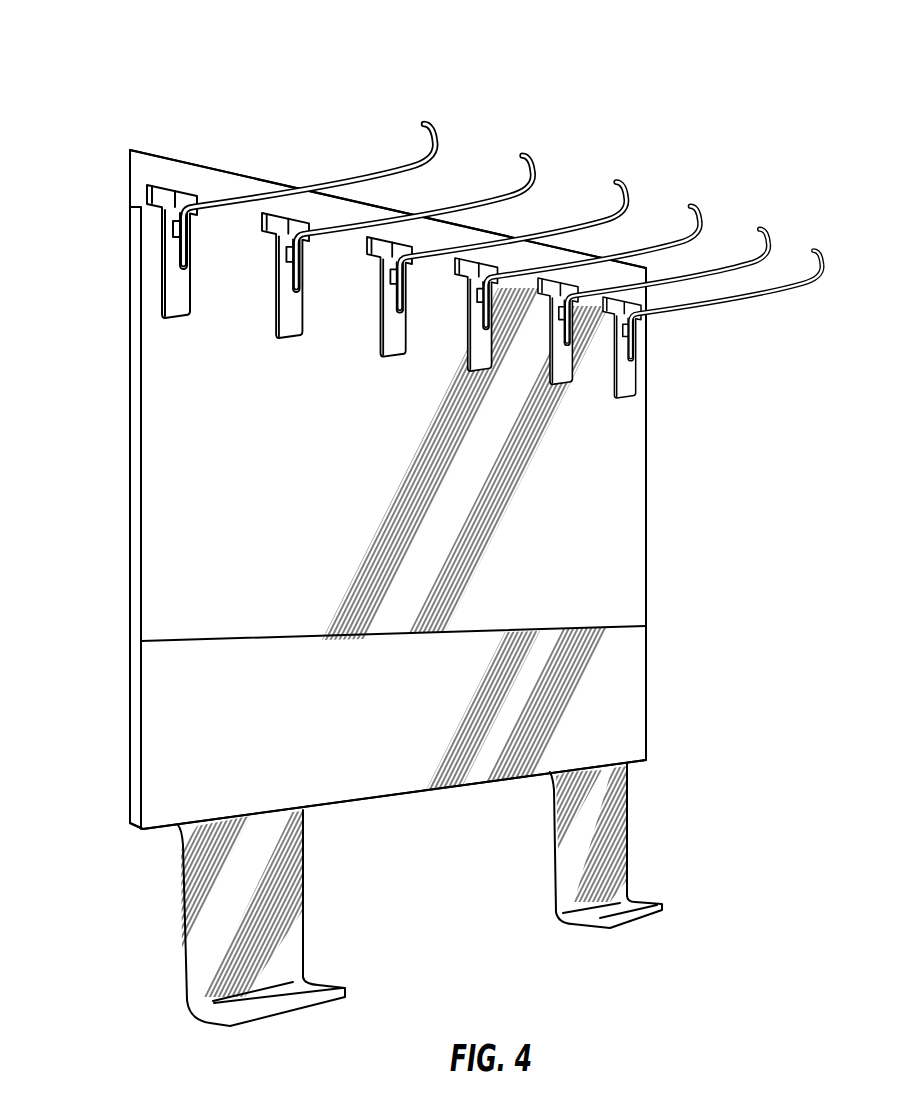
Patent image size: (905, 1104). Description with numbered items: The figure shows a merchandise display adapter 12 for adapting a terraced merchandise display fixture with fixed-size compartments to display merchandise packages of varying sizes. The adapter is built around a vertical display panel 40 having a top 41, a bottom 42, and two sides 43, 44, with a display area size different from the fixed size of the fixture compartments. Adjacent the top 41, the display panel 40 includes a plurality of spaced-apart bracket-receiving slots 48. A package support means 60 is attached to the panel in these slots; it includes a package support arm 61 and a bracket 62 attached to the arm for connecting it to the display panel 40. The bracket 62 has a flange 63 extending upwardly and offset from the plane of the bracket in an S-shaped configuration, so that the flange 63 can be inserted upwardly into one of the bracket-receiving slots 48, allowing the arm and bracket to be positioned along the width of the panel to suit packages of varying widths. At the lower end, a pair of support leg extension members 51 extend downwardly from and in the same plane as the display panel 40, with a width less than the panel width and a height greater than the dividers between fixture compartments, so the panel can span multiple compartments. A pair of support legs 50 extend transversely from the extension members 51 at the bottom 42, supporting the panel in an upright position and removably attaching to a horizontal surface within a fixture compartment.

The merchandise display adapter 12 is at (418, 544).
The display panel 40 is at (645, 508).
The top 41 is at (238, 171).
The bottom 42 is at (461, 790).
The side 43 is at (134, 576).
The side 44 is at (632, 575).
The bracket-receiving slots 48 is at (404, 256).
The support leg 50 is at (212, 1011).
The support leg extension members 51 is at (240, 873).
The package support means 60 is at (225, 217).
The package support arm 61 is at (388, 163).
The bracket 62 is at (168, 281).
The flange 63 is at (163, 193).